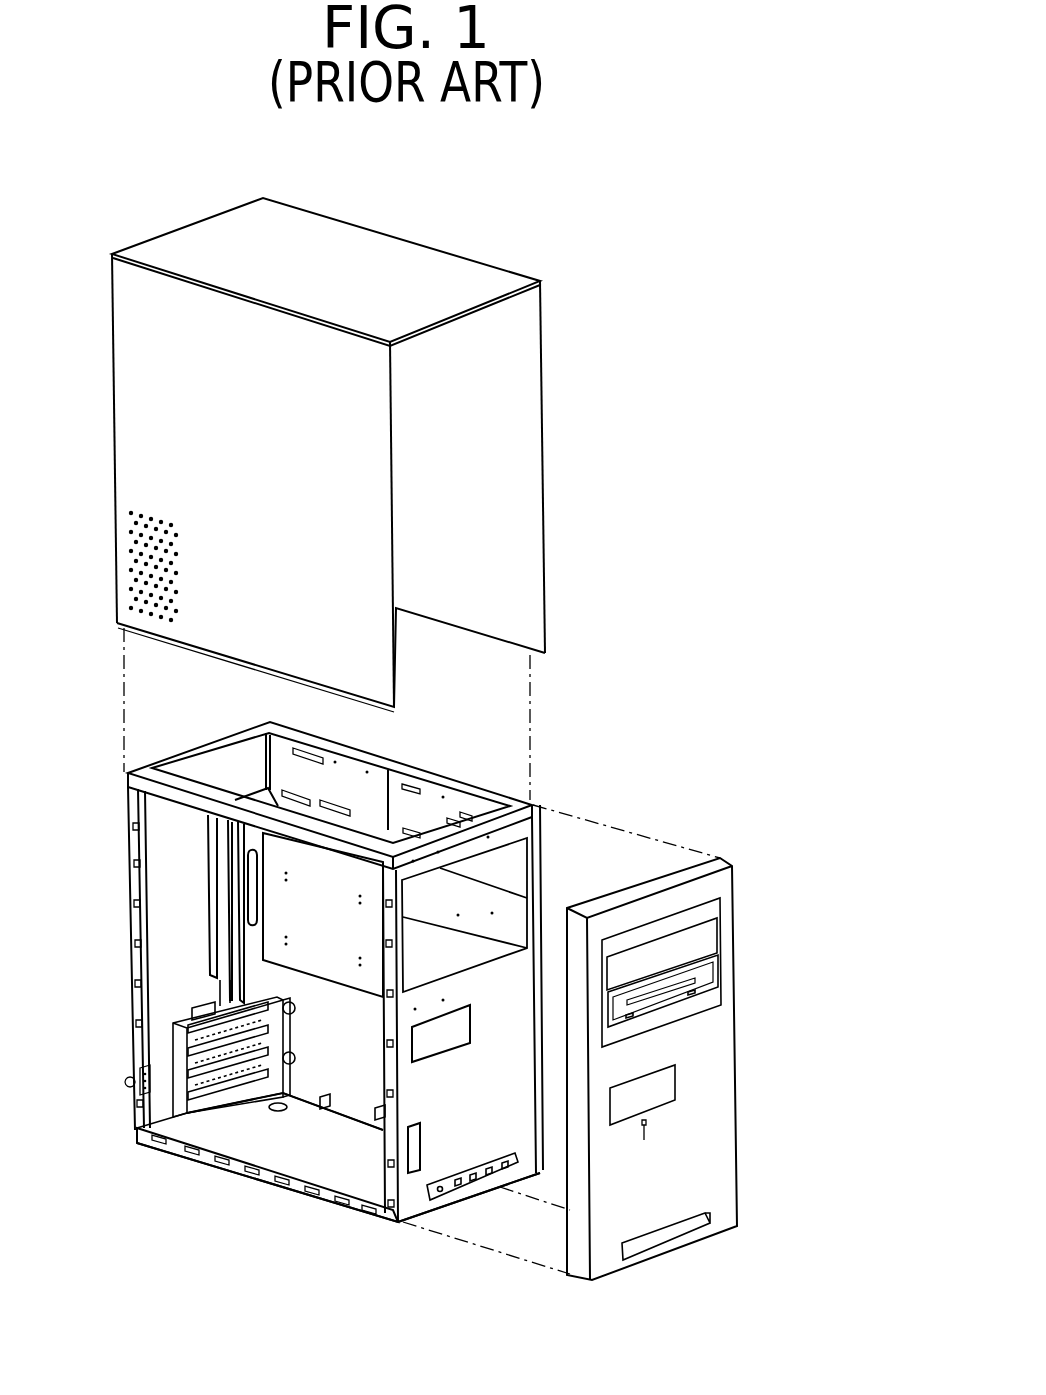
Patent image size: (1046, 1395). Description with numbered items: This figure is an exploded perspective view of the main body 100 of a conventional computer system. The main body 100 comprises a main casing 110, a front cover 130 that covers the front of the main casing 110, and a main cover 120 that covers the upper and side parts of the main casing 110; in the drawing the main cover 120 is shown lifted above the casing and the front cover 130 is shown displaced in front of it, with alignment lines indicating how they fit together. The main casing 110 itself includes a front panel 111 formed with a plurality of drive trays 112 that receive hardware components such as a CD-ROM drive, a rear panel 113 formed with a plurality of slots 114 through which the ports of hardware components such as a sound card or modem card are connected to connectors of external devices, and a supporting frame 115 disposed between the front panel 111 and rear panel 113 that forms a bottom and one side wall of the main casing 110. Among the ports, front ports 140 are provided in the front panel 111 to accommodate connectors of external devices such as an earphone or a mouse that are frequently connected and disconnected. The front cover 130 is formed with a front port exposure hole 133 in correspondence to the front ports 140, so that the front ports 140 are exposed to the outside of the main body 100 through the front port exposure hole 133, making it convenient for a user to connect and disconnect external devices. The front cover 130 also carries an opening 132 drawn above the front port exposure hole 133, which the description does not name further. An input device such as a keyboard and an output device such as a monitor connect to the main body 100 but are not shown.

The main body 100 is at (720, 268).
The main casing 110 is at (365, 1292).
The front panel 111 is at (412, 1190).
The drive trays 112 is at (528, 888).
The rear panel 113 is at (158, 1114).
The slots 114 is at (182, 1050).
The supporting frame 115 is at (307, 1168).
The main cover 120 is at (540, 358).
The front cover 130 is at (737, 1075).
The drive opening 132 is at (697, 927).
The front port exposure hole 133 is at (705, 1228).
The front ports 140 is at (465, 1195).